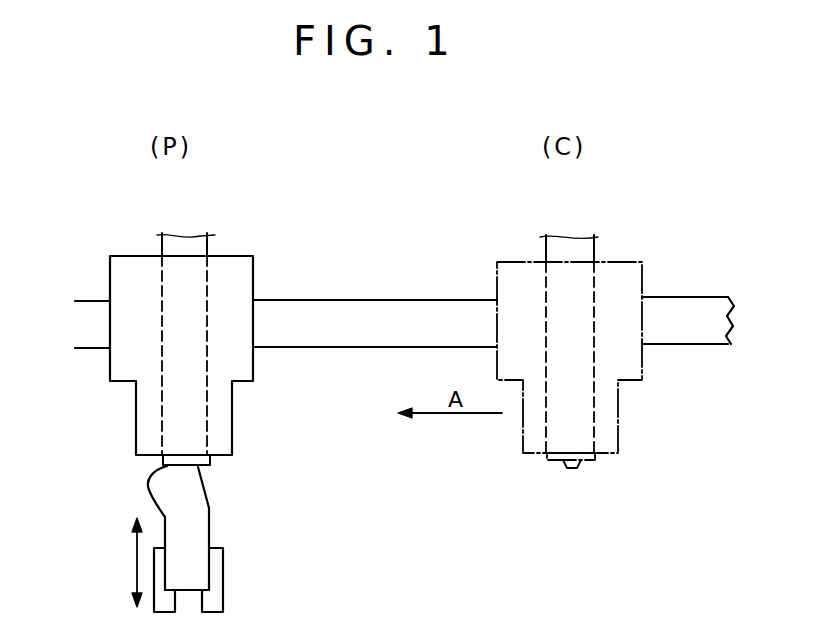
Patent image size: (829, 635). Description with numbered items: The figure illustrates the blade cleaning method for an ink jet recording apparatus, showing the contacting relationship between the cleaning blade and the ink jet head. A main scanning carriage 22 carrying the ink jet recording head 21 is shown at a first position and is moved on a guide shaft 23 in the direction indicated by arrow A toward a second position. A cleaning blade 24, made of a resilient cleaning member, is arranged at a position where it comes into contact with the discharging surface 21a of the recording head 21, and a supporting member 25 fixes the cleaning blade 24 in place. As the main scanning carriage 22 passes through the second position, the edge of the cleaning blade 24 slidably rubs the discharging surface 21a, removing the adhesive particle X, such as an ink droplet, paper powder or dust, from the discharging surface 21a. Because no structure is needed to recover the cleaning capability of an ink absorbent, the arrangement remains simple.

The ink jet recording head 21 is at (192, 247).
The discharging surface 21a is at (198, 466).
The main scanning carriage 22 is at (240, 277).
The guide shaft 23 is at (698, 313).
The cleaning blade 24 is at (195, 582).
The supporting member 25 is at (213, 559).
The adhesive particle X is at (183, 467).